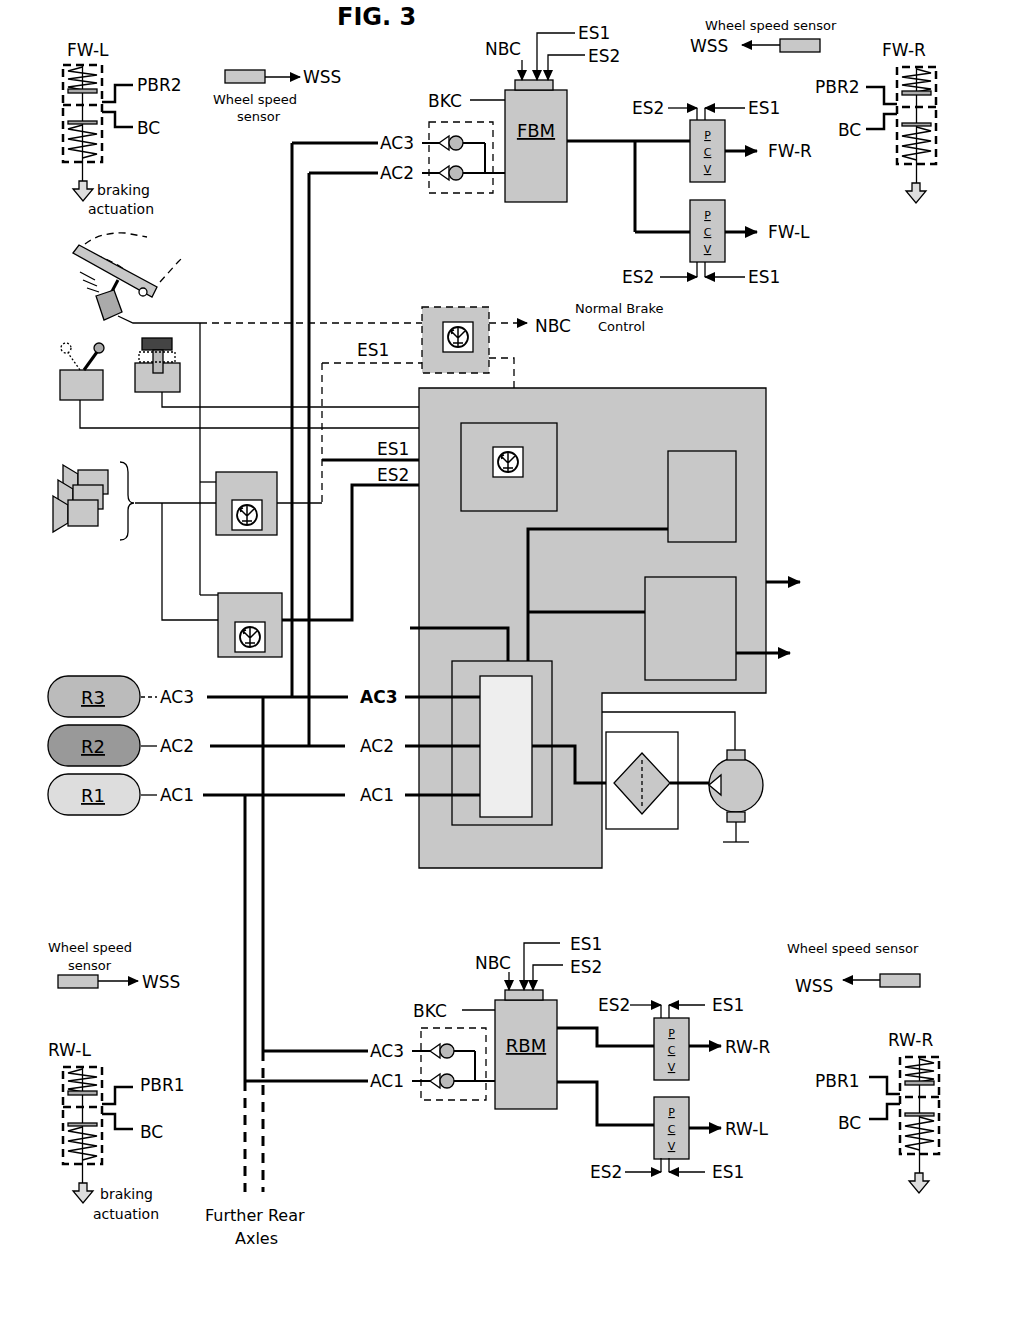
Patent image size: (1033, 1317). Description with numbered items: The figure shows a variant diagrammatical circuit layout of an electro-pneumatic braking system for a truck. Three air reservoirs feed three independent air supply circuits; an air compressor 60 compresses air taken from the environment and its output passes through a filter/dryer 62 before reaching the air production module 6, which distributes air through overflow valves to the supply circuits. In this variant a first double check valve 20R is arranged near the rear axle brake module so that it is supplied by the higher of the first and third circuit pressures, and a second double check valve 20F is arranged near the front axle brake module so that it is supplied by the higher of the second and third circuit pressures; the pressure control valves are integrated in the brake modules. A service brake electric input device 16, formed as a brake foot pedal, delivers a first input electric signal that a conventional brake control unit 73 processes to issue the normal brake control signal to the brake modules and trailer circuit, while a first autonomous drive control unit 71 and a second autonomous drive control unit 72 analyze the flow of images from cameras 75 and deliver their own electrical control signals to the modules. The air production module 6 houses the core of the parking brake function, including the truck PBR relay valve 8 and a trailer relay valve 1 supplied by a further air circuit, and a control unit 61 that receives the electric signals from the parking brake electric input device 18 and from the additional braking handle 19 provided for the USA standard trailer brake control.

The trailer relay valve 1 is at (686, 447).
The air production module 6 is at (646, 616).
The truck PBR relay valve 8 is at (642, 638).
The service brake electric input device 16 is at (95, 307).
The parking brake electric input device 18 is at (60, 385).
The additional braking handle 19 is at (142, 388).
The second double check valve 20F is at (460, 194).
The first double check valve 20R is at (457, 1101).
The air compressor 60 is at (760, 769).
The control unit 61 is at (530, 424).
The filter/dryer 62 is at (660, 800).
The first autonomous drive control unit 71 is at (240, 484).
The second autonomous drive control unit 72 is at (237, 605).
The conventional brake control unit 73 is at (438, 306).
The cameras 75 is at (88, 527).